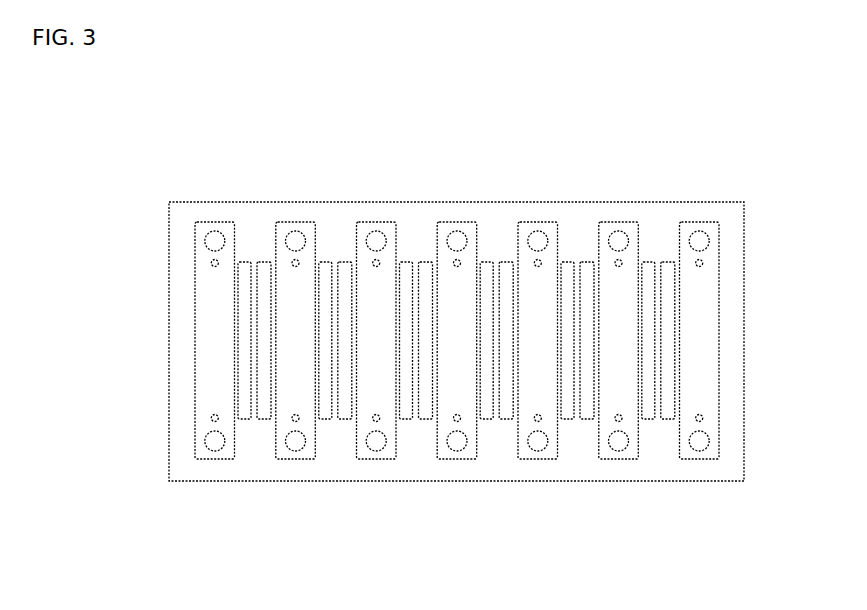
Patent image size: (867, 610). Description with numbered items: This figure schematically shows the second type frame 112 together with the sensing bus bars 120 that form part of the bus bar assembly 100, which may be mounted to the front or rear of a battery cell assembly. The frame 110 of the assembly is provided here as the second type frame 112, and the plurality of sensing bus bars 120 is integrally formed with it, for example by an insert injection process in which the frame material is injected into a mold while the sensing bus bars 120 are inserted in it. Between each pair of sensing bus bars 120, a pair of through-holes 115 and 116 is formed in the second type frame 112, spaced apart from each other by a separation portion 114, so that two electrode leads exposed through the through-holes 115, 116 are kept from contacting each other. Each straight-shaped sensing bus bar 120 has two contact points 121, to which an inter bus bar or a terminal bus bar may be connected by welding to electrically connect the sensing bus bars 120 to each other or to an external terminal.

The bus bar assembly 100 is at (208, 130).
The frame 110 is at (456, 341).
The second type frame 112 is at (184, 463).
The separation portion 114 is at (659, 383).
The through-hole 115 is at (649, 301).
The through-hole 116 is at (668, 337).
The sensing bus bar 120 is at (447, 232).
The contact point 121 is at (540, 240).